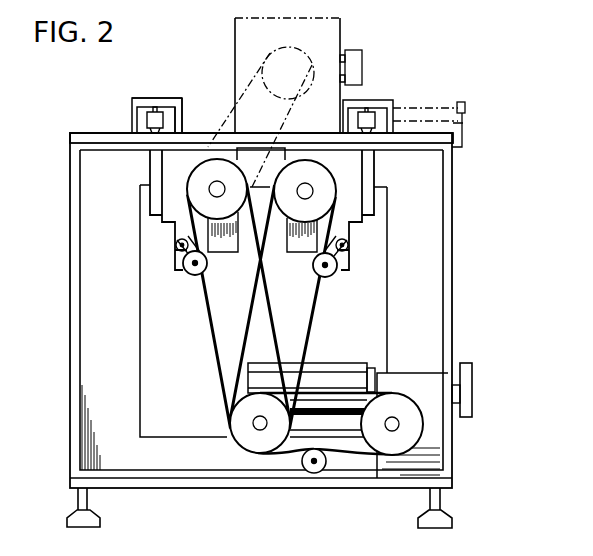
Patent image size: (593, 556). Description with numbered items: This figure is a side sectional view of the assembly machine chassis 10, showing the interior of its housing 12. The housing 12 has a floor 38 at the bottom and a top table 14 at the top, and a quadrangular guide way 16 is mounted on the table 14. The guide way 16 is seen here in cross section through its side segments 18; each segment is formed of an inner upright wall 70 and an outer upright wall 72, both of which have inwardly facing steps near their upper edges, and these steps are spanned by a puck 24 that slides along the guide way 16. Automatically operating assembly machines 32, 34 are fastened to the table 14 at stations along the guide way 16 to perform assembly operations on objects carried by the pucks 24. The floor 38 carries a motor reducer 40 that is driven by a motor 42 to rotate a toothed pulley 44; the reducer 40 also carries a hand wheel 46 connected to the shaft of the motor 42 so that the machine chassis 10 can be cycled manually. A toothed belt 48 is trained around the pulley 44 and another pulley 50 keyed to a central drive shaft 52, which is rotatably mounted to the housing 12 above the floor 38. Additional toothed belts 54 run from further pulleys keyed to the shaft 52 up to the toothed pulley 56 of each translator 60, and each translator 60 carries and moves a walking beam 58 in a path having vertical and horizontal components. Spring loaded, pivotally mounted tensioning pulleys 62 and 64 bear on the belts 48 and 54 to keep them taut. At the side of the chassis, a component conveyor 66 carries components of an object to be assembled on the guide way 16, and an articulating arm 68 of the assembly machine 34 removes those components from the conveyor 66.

The assembly machine chassis 10 is at (480, 98).
The housing 12 is at (72, 252).
The top table 14 is at (73, 137).
The guide way 16 is at (133, 108).
The side segments 18 is at (177, 127).
The pucks 24 is at (157, 99).
The assembly machine 32 is at (261, 117).
The assembly machine 34 is at (330, 30).
The floor 38 is at (172, 478).
The motor reducer 40 is at (425, 372).
The motor 42 is at (327, 366).
The toothed pulley 44 is at (412, 432).
The hand wheel 46 is at (472, 378).
The toothed belt 48 is at (357, 367).
The pulley 50 is at (242, 424).
The central drive shaft 52 is at (265, 430).
The toothed belts 54 is at (218, 350).
The toothed pulley 56 is at (197, 190).
The walking beam 58 is at (147, 118).
The translator 60 is at (182, 222).
The tensioning pulley 62 is at (319, 470).
The tensioning pulleys 64 is at (313, 263).
The component conveyor 66 is at (466, 110).
The articulating arm 68 is at (362, 63).
The inner upright wall 70 is at (178, 117).
The outer upright wall 72 is at (137, 158).